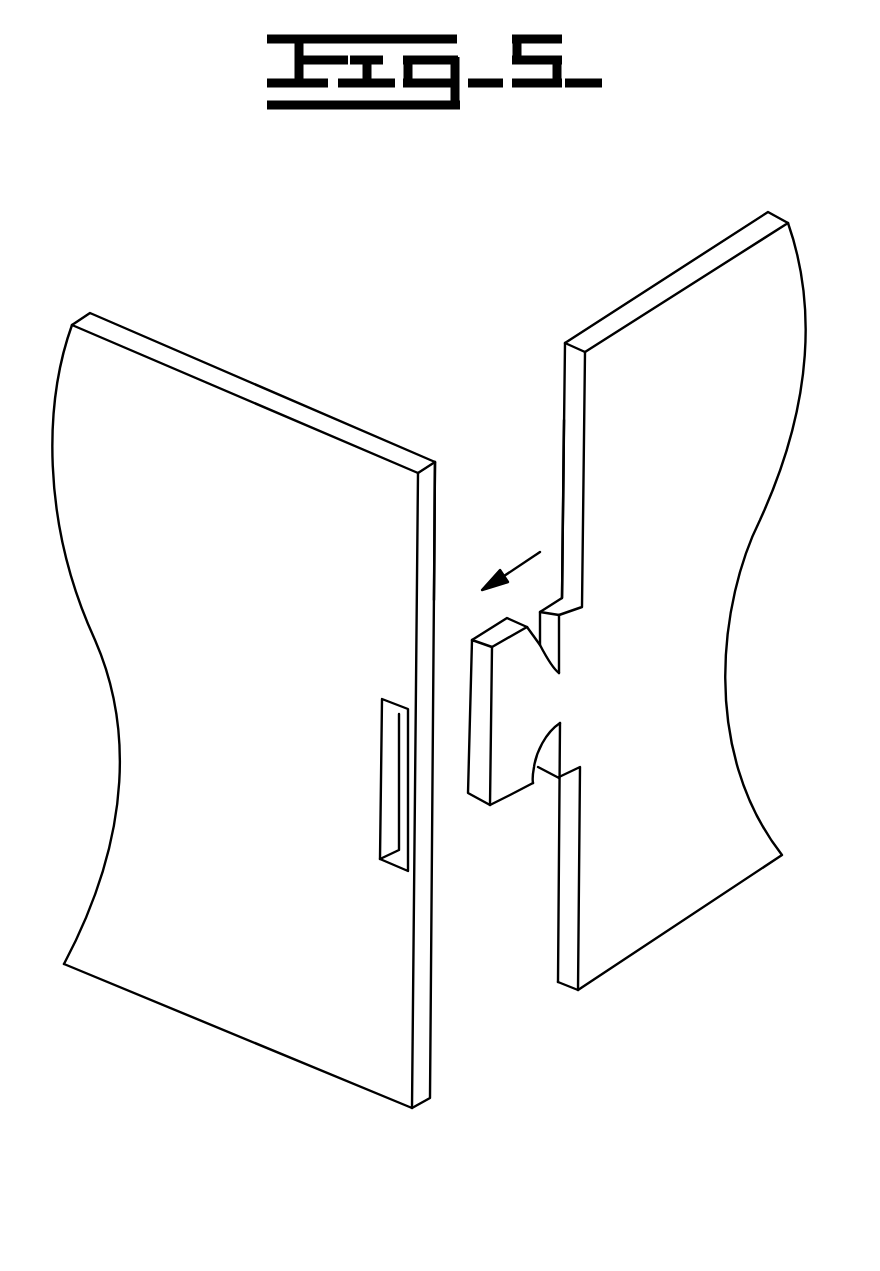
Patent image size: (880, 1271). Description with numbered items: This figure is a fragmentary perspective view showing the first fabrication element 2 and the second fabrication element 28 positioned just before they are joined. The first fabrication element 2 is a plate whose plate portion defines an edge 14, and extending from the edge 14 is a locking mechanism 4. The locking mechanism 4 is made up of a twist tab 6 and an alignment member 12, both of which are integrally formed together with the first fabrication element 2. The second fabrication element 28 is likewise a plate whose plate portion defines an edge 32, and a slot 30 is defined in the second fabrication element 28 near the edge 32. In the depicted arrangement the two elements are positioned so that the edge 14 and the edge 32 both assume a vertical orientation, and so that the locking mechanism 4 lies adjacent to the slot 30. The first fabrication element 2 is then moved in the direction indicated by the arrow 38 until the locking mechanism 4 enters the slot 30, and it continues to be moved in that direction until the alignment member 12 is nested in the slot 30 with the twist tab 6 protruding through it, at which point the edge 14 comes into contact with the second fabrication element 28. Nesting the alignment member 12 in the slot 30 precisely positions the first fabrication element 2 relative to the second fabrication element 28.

The first fabrication element 2 is at (610, 237).
The locking mechanism 4 is at (524, 804).
The twist tab 6 is at (492, 777).
The alignment member 12 is at (567, 760).
The edge 14 is at (573, 408).
The second fabrication element 28 is at (182, 308).
The slot 30 is at (391, 777).
The edge 32 is at (428, 483).
The arrow 38 is at (518, 561).